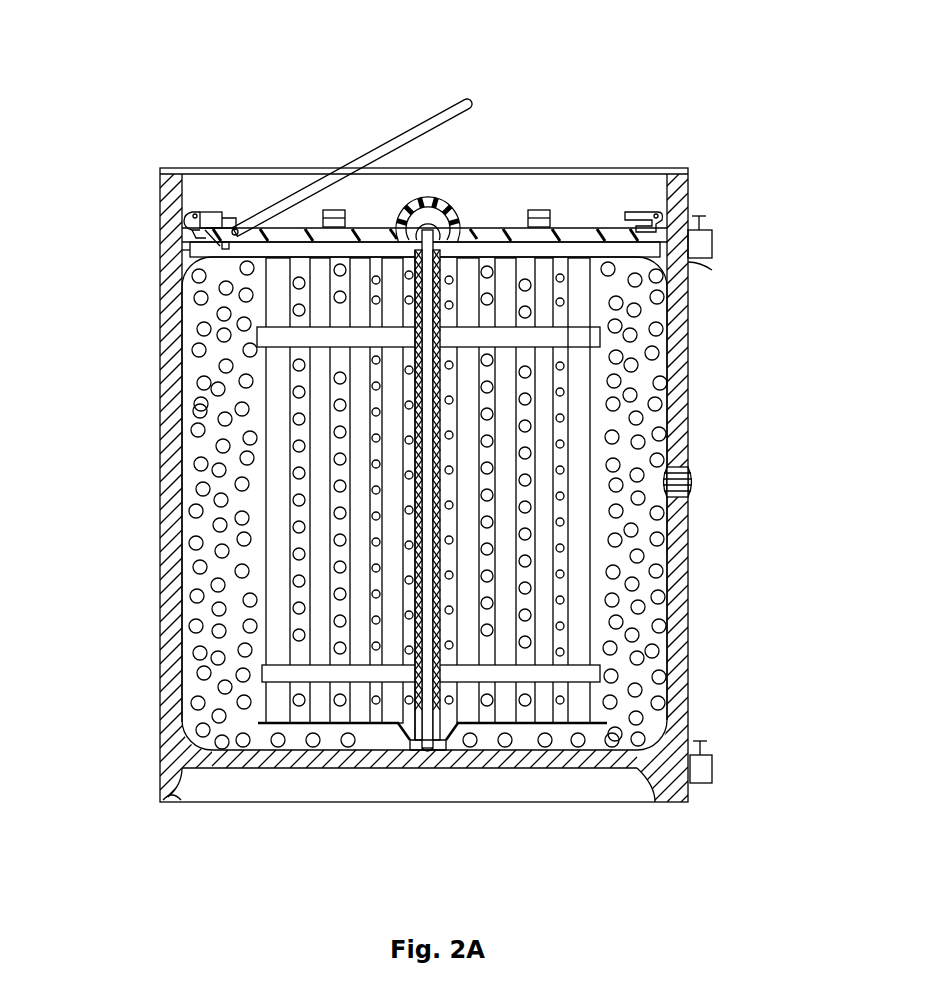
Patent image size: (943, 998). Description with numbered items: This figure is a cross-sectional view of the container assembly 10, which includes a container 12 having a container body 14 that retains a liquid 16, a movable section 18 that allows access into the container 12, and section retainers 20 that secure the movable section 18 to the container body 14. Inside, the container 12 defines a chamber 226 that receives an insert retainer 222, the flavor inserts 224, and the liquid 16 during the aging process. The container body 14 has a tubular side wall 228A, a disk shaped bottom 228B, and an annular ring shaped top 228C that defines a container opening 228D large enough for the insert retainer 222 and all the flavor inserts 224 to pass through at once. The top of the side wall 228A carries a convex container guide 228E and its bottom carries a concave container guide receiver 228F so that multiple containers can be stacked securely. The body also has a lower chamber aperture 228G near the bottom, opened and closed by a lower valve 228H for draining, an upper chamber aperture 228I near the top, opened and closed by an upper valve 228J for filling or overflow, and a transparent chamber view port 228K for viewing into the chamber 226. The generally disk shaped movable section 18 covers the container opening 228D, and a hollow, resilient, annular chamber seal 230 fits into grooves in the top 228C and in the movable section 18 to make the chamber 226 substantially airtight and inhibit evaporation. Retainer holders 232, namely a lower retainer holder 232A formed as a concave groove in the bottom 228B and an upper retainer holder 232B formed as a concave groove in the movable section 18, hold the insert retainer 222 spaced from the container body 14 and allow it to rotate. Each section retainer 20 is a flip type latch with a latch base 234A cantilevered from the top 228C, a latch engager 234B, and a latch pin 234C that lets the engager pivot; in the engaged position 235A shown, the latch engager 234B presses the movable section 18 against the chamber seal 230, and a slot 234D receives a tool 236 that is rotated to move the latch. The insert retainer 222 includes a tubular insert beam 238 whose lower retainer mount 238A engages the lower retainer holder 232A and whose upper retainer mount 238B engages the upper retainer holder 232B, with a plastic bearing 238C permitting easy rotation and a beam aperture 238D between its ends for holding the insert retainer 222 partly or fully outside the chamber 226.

The container assembly 10 is at (725, 188).
The container 12 is at (692, 440).
The container body 14 is at (178, 375).
The liquid 16 is at (192, 411).
The movable section 18 is at (580, 265).
The section retainer 20 is at (226, 213).
The insert retainer 222 is at (490, 266).
The flavor insert 224 is at (583, 242).
The chamber 226 is at (195, 459).
The tubular side wall 228A is at (182, 330).
The disk shaped bottom 228B is at (279, 769).
The annular ring shaped top 228C is at (185, 262).
The container opening 228D is at (266, 250).
The container guide 228E is at (183, 171).
The container guide receiver 228F is at (175, 802).
The lower chamber aperture 228G is at (655, 803).
The lower valve 228H is at (712, 770).
The upper chamber aperture 228I is at (690, 262).
The upper valve 228J is at (712, 244).
The chamber view port 228K is at (694, 482).
The chamber seal 230 is at (220, 244).
The retainer holder 232 is at (440, 262).
The lower retainer holder 232A is at (430, 752).
The upper retainer holder 232B is at (446, 214).
The latch base 234A is at (196, 228).
The latch engager 234B is at (214, 213).
The latch pin 234C is at (196, 216).
The slot 234D is at (656, 214).
The engaged position 235A is at (240, 229).
The tool 236 is at (384, 133).
The insert beam 238 is at (446, 748).
The lower retainer mount 238A is at (428, 752).
The upper retainer mount 238B is at (437, 208).
The plastic bearing 238C is at (414, 206).
The beam aperture 238D is at (413, 262).